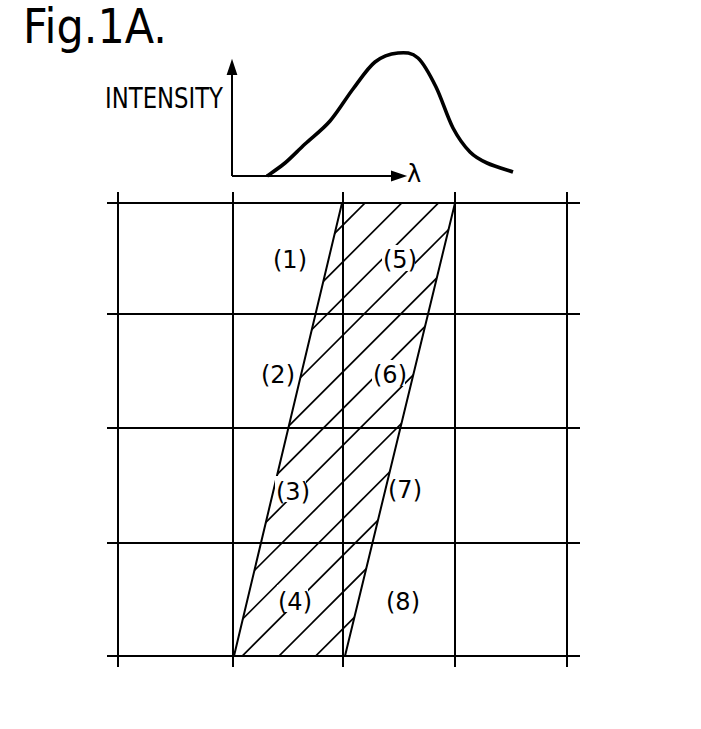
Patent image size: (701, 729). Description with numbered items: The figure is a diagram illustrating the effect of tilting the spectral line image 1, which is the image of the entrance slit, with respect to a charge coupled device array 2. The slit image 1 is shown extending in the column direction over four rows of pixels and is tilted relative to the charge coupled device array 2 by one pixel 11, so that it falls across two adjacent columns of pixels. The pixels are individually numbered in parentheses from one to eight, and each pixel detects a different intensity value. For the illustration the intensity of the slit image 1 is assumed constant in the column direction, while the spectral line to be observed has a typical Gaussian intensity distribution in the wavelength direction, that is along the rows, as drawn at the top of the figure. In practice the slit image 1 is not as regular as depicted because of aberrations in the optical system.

The spectral line image 1 is at (415, 368).
The charge coupled device array 2 is at (567, 601).
The pixel 11 is at (157, 609).